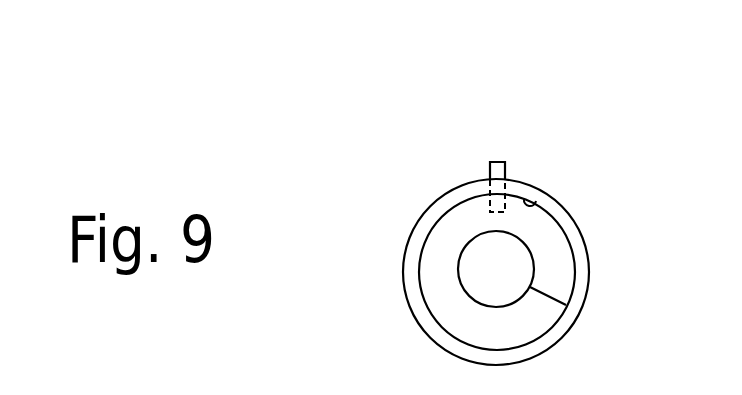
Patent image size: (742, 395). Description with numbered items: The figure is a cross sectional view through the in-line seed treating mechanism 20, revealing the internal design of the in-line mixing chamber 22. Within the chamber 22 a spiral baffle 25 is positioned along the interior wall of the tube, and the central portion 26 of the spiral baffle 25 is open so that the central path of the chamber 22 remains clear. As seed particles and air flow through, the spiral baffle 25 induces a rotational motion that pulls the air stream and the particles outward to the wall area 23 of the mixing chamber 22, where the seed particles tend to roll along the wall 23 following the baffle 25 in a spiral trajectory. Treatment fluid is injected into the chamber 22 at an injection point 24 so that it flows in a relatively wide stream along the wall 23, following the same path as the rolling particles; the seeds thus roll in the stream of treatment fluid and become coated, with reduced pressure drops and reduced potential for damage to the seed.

The in-line seed treating mechanism 20 is at (535, 132).
The in-line mixing chamber 22 is at (573, 216).
The wall area 23 is at (533, 205).
The injection point 24 is at (490, 177).
The spiral baffle 25 is at (563, 275).
The central portion 26 is at (487, 273).